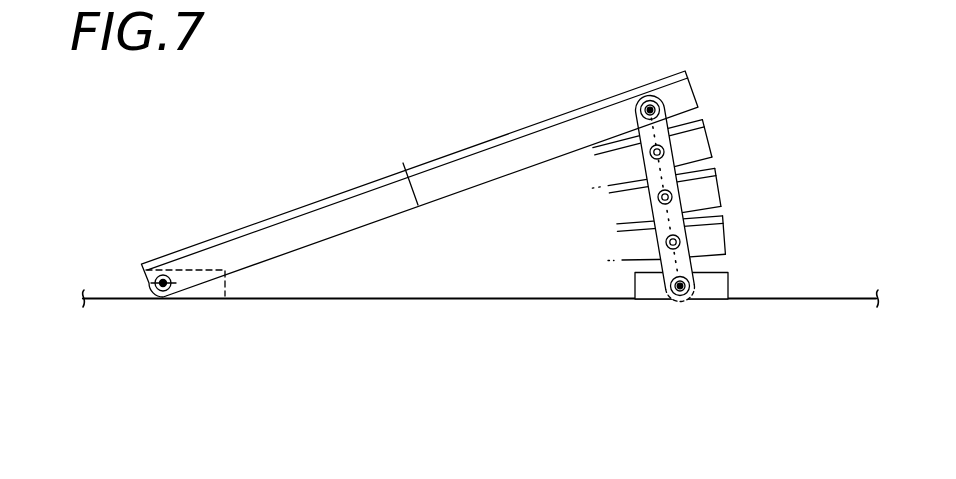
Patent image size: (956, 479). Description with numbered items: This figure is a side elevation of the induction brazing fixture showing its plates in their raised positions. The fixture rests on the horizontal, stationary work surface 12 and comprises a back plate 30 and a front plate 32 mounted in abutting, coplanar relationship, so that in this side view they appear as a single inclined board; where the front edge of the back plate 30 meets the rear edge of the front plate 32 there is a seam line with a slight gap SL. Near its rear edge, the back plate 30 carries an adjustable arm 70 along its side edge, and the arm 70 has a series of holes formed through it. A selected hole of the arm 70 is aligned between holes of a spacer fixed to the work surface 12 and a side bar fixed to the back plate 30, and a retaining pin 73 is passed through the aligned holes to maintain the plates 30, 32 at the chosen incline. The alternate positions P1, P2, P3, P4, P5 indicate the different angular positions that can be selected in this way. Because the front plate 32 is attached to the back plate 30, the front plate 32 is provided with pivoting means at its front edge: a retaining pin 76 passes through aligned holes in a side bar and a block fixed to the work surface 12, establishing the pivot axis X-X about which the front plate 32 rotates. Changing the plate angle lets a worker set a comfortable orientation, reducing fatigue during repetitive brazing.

The work surface 12 is at (417, 298).
The back plate 30 is at (472, 167).
The front plate 32 is at (292, 210).
The adjustable arm 70 is at (617, 165).
The retaining pin 73 is at (649, 100).
The retaining pin 76 is at (164, 291).
The seam line gap SL is at (403, 163).
The alternate position P1 is at (680, 95).
The alternate position P2 is at (698, 142).
The alternate position P3 is at (707, 190).
The alternate position P4 is at (717, 237).
The alternate position P5 is at (720, 285).
The pivot axis X-X is at (140, 288).